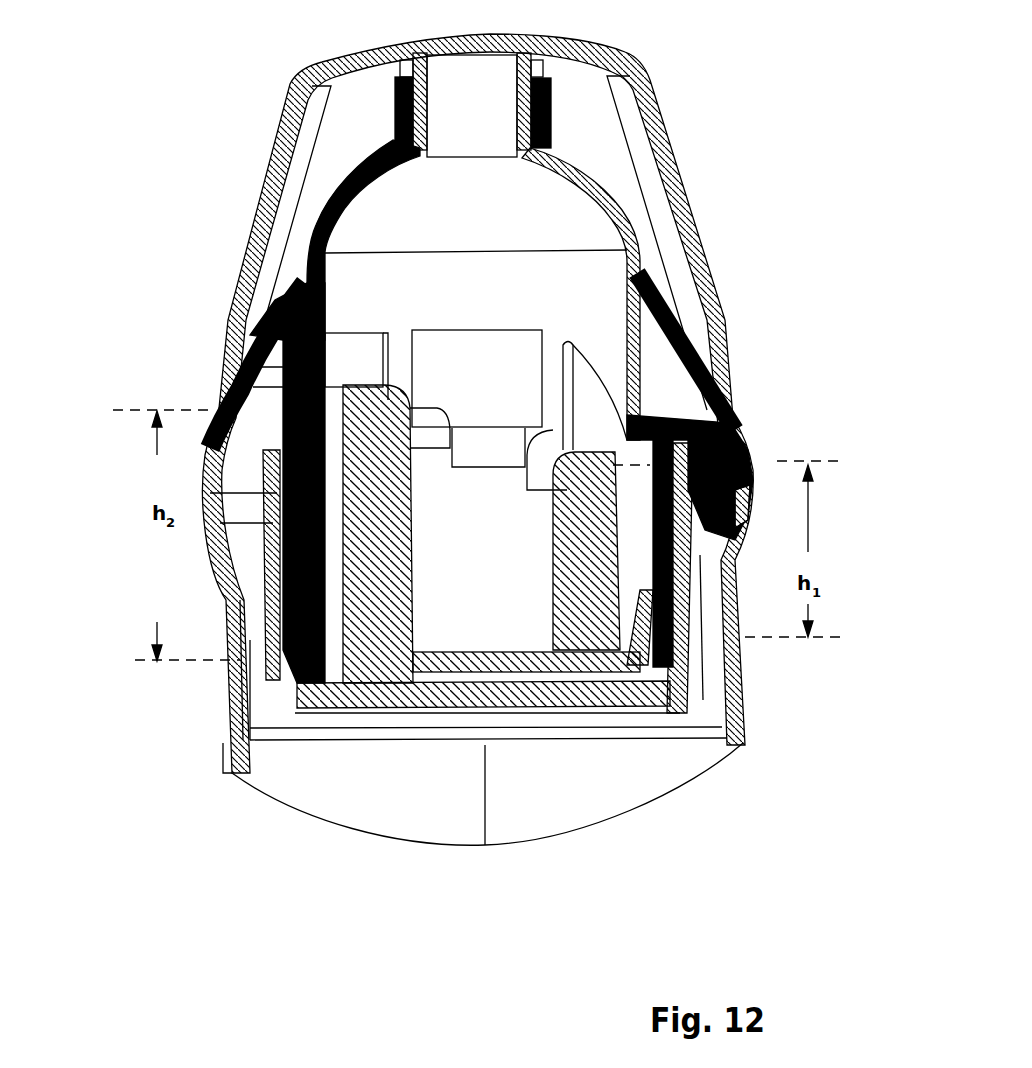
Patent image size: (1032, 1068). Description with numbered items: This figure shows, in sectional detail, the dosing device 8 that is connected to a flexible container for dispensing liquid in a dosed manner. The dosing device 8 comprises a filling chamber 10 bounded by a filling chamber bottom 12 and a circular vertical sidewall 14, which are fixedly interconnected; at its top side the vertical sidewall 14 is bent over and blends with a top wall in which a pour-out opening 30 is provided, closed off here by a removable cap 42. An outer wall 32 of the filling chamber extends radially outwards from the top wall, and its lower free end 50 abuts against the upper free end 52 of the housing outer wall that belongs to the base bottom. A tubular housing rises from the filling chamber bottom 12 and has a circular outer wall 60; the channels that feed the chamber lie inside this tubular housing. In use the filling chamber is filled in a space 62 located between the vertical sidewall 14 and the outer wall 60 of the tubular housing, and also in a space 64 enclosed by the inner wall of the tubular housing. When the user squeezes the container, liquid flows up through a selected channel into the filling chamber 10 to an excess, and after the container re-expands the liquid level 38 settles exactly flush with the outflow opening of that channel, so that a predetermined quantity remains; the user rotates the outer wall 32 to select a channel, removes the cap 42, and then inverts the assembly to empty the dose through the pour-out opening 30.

The dosing device 8 is at (712, 826).
The filling chamber 10 is at (573, 220).
The filling chamber bottom 12 is at (477, 660).
The vertical sidewall 14 is at (326, 363).
The pour-out opening 30 is at (487, 113).
The outer wall 32 is at (205, 463).
The liquid level 38 is at (180, 408).
The removable cap 42 is at (657, 98).
The lower free end 50 is at (753, 466).
The upper free end 52 is at (748, 487).
The outer wall 60 is at (283, 592).
The space 62 is at (235, 545).
The space 64 is at (493, 537).